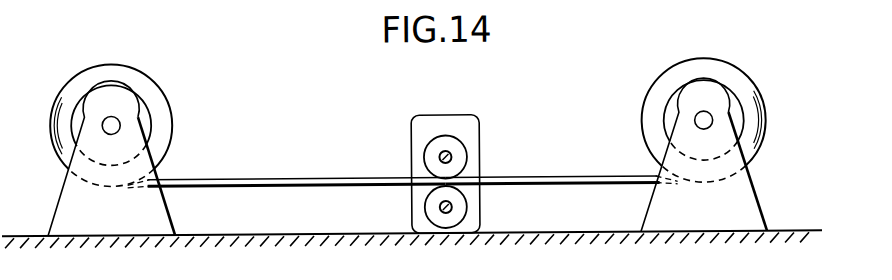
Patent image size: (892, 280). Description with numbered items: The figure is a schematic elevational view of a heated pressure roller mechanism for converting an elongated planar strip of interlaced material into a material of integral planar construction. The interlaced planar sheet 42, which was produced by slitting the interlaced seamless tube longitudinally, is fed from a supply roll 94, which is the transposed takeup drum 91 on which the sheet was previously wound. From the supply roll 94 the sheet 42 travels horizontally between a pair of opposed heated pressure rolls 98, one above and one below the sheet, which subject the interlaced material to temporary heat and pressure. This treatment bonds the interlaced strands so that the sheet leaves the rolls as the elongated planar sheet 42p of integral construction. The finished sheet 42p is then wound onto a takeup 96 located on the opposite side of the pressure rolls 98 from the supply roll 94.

The supply roll 94 is at (121, 70).
The takeup drum 91 is at (145, 98).
The interlaced planar sheet 42 is at (229, 176).
The planar sheet of integral construction 42p is at (648, 134).
The takeup 96 is at (734, 104).
The heated pressure rolls 98 is at (430, 150).